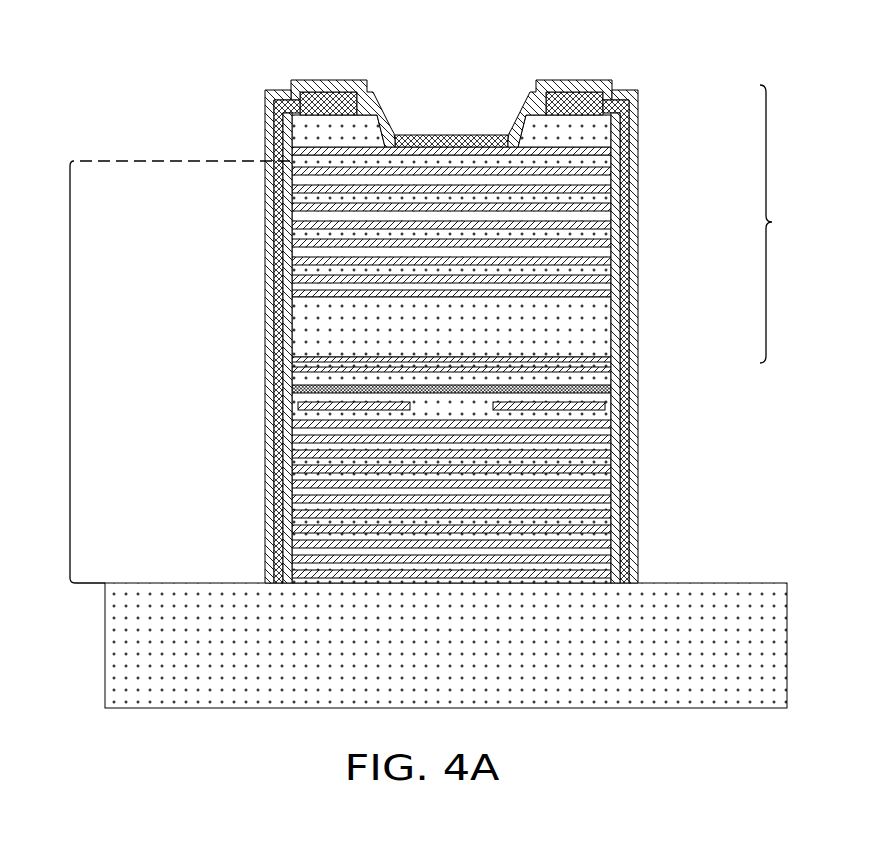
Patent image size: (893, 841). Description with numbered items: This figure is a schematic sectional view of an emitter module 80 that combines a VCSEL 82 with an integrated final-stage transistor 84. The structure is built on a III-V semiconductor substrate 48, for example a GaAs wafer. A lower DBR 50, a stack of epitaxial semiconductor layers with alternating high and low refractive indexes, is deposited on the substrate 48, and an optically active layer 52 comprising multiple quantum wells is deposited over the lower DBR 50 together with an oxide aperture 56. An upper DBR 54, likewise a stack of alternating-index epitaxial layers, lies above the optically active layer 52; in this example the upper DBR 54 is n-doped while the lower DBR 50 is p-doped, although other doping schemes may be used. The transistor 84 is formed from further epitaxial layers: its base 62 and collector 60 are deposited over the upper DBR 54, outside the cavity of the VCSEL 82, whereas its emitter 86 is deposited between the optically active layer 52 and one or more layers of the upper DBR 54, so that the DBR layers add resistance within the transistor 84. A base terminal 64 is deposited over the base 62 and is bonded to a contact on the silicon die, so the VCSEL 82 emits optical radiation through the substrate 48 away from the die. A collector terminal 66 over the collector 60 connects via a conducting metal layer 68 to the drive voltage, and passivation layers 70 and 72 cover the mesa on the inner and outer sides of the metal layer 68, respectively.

The III-V semiconductor substrate 48 is at (118, 644).
The lower distributed Bragg reflector 50 is at (323, 517).
The optically active layer 52 is at (305, 389).
The upper distributed Bragg reflector 54 is at (600, 182).
The oxide aperture 56 is at (298, 405).
The collector 60 is at (300, 130).
The base 62 is at (300, 153).
The base terminal 64 is at (455, 133).
The collector terminal 66 is at (598, 109).
The conducting metal layer 68 is at (624, 357).
The inner passivation layer 70 is at (620, 285).
The outer passivation layer 72 is at (632, 447).
The emitter module 80 is at (158, 56).
The VCSEL 82 is at (70, 365).
The transistor 84 is at (781, 224).
The emitter 86 is at (310, 328).